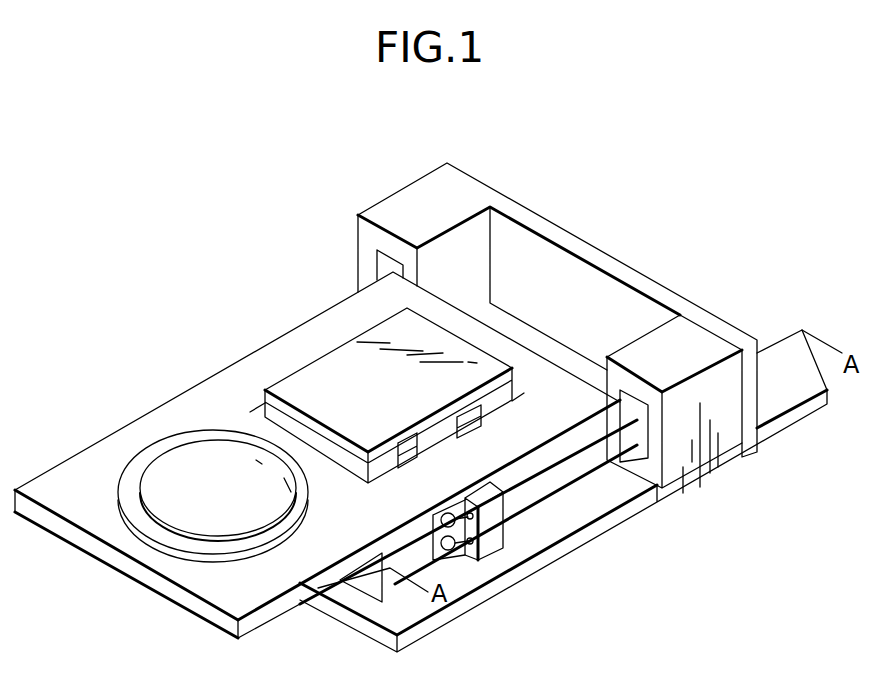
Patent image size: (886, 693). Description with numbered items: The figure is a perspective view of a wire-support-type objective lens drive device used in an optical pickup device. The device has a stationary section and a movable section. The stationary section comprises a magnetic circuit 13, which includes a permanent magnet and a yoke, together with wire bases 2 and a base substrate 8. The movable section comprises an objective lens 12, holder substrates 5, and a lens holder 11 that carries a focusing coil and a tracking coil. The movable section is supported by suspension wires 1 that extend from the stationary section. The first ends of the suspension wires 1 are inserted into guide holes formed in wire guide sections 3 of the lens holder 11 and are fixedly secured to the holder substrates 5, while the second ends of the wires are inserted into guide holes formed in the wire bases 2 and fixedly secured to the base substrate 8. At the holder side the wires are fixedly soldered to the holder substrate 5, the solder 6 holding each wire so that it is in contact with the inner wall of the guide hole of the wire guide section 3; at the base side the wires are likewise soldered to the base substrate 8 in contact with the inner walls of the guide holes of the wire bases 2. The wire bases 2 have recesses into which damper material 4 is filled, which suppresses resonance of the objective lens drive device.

The suspension wires 1 is at (567, 457).
The wire bases 2 is at (703, 345).
The wire guide sections 3 is at (497, 533).
The damper material 4 is at (635, 448).
The holder substrates 5 is at (448, 550).
The solder 6 is at (448, 512).
The base substrate 8 is at (580, 247).
The lens holder 11 is at (257, 367).
The objective lens 12 is at (190, 462).
The magnetic circuit 13 is at (337, 363).